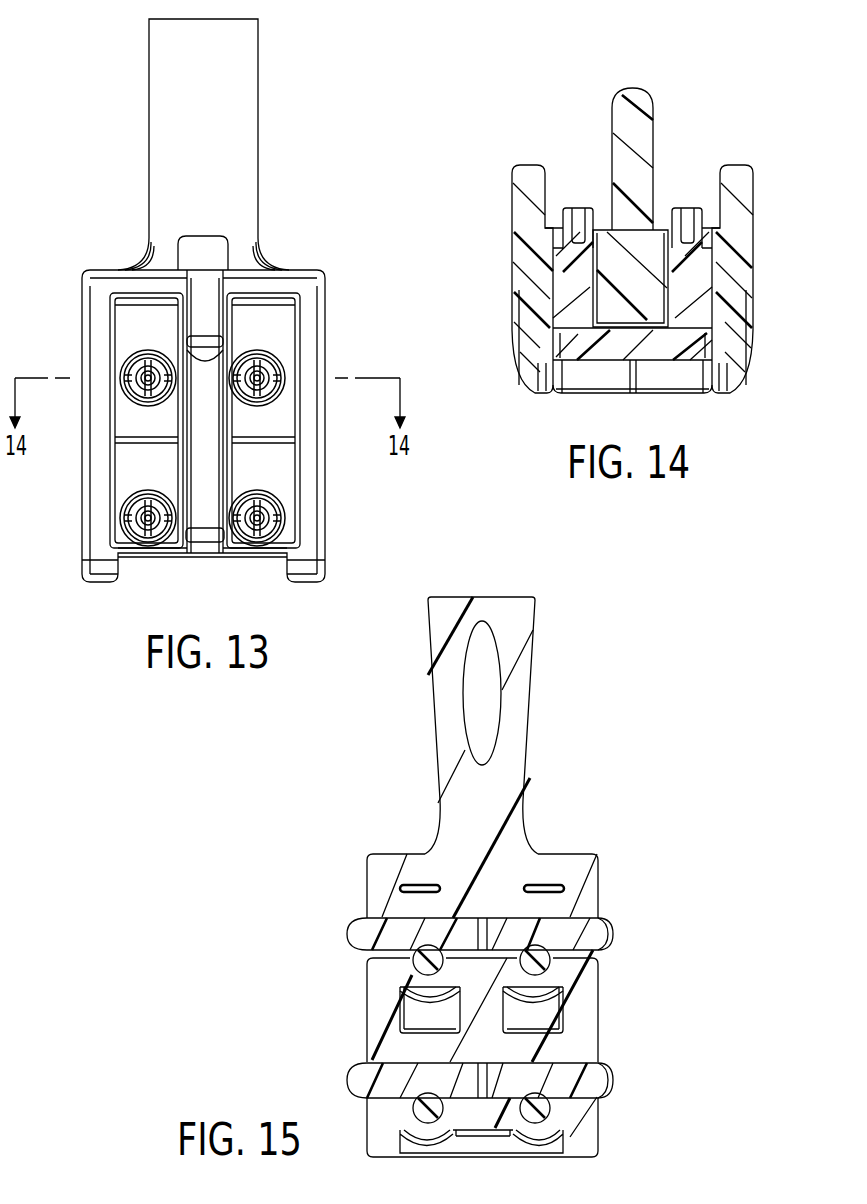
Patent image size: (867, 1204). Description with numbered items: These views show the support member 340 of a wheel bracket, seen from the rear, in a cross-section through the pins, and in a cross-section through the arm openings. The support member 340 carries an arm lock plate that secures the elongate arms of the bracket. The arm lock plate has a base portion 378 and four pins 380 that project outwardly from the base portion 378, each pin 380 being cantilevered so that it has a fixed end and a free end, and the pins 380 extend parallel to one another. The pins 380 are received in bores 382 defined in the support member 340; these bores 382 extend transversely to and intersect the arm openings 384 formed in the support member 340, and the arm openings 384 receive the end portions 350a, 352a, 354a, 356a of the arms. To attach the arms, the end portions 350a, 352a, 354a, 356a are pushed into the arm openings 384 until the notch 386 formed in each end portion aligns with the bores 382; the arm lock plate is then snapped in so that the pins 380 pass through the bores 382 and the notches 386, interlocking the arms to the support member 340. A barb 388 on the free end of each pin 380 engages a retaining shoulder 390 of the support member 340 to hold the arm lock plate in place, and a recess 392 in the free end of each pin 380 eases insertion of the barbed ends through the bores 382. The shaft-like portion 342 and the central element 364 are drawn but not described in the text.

In FIG. 13, the support member 340 is at (105, 270).
In FIG. 15, the support member 340 is at (395, 854).
In FIG. 13, the shaft 342 is at (258, 128).
In FIG. 15, the shaft 342 is at (538, 648).
In FIG. 15, the end portion of arm 350a is at (355, 930).
In FIG. 15, the end portion of arm 352a is at (355, 1073).
In FIG. 15, the end portion of arm 354a is at (615, 930).
In FIG. 15, the end portion of arm 356a is at (615, 1073).
In FIG. 13, the central post 364 is at (207, 300).
In FIG. 14, the central post 364 is at (640, 98).
In FIG. 14, the base portion 378 is at (672, 378).
In FIG. 13, the pin 380 is at (235, 530).
In FIG. 14, the pin 380 is at (570, 283).
In FIG. 15, the pin 380 is at (412, 977).
In FIG. 14, the bore 382 is at (560, 300).
In FIG. 15, the bore 382 is at (420, 968).
In FIG. 15, the arm opening 384 is at (483, 918).
In FIG. 15, the notch 386 is at (412, 957).
In FIG. 13, the barb 388 is at (140, 365).
In FIG. 14, the barb 388 is at (558, 225).
In FIG. 13, the retaining shoulder 390 is at (272, 398).
In FIG. 14, the retaining shoulder 390 is at (545, 243).
In FIG. 14, the recess 392 is at (585, 213).